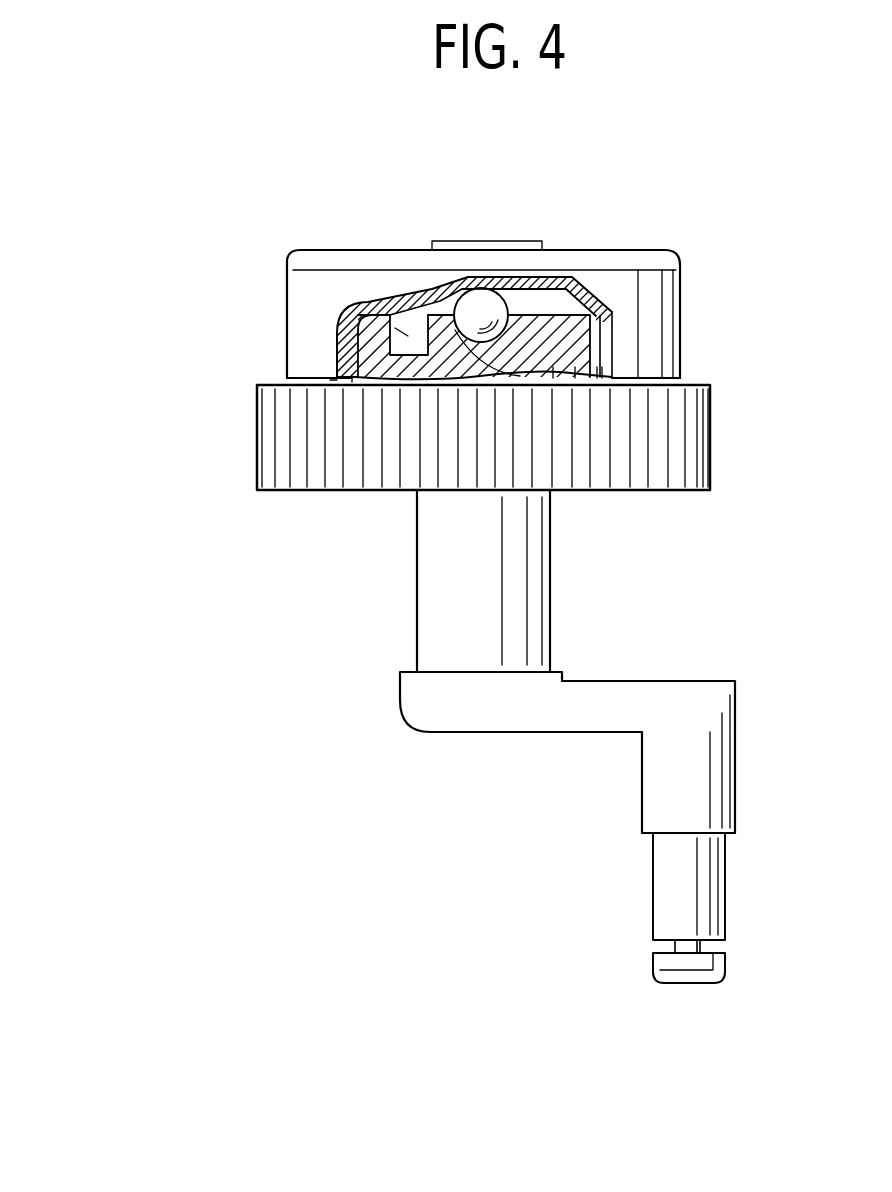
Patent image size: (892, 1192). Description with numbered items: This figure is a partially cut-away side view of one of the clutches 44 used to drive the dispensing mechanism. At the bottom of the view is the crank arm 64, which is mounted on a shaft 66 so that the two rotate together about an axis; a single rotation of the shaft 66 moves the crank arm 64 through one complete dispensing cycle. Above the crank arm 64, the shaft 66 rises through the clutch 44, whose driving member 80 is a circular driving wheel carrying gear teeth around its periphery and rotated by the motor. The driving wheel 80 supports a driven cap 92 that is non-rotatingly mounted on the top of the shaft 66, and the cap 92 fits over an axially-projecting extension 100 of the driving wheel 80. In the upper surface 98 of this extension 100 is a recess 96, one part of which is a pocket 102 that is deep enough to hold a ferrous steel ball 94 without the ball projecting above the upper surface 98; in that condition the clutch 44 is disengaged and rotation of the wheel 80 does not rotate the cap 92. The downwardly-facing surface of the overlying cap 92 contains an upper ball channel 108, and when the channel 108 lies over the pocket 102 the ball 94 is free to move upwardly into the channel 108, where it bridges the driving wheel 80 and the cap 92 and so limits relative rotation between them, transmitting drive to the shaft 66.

The clutch 44 is at (210, 515).
The crank arm 64 is at (650, 692).
The shaft 66 is at (518, 580).
The driving member 80 is at (675, 435).
The driven cap 92 is at (673, 287).
The ferrous steel ball 94 is at (483, 305).
The recess 96 is at (415, 318).
The upper surface 98 is at (530, 307).
The axially-projecting extension 100 is at (607, 340).
The pocket 102 is at (383, 337).
The upper ball channel 108 is at (545, 283).